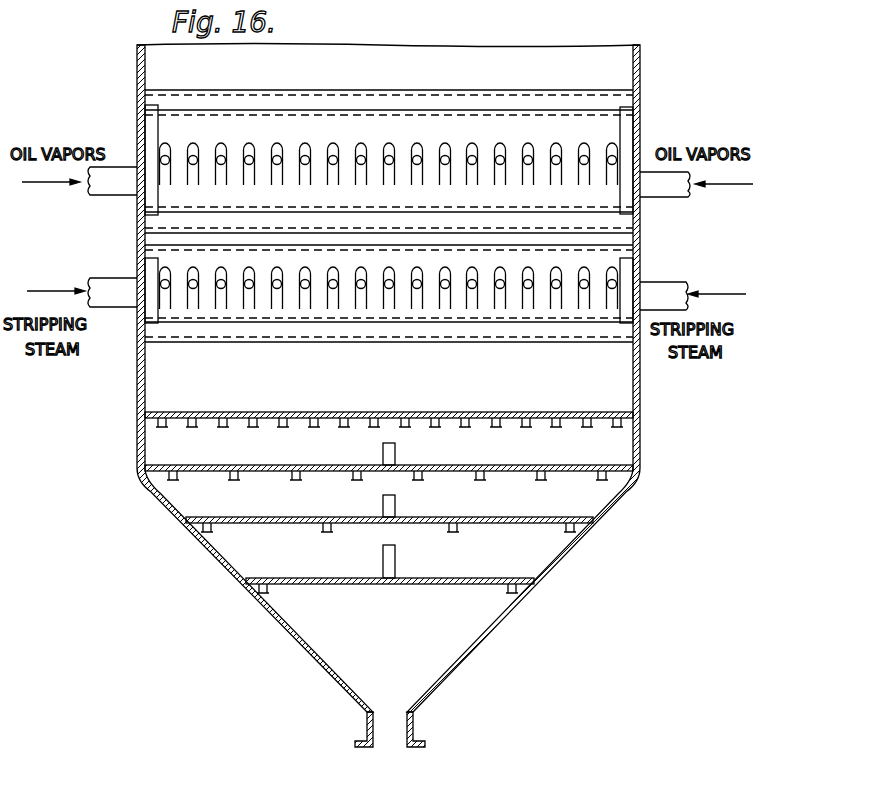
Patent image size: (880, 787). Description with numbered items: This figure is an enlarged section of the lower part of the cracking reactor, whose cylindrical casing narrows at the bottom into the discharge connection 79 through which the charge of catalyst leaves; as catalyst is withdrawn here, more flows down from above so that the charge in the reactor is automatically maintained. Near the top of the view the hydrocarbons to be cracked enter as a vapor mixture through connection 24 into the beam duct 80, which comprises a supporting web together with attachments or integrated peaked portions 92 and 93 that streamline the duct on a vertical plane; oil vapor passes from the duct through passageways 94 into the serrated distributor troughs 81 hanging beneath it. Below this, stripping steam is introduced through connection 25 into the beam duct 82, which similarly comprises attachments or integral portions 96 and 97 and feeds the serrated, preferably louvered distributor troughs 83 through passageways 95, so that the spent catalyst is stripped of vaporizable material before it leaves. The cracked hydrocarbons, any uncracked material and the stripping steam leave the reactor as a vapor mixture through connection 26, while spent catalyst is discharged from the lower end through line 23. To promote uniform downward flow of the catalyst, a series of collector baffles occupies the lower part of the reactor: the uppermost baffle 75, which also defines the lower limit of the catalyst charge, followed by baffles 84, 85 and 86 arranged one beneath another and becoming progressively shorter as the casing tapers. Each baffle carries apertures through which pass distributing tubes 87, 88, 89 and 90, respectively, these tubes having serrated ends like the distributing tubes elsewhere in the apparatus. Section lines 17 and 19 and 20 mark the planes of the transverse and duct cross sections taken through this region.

The section line 17- 17 is at (389, 10).
The section line 19- 19 is at (398, 84).
The section line 20- 20 is at (640, 254).
The spent catalyst discharge line / section line 23- 23 is at (394, 396).
The hydrocarbon vapor inlet connection / section line 24- 24 is at (105, 186).
The stripping steam connection / section line 25- 25 is at (101, 283).
The vapor outlet connection / section line 26- 26 is at (394, 558).
The collector baffle 75 is at (550, 412).
The discharge connection 79 is at (413, 728).
The beam duct 80 is at (383, 118).
The distributor troughs 81 is at (304, 143).
The beam duct 82 is at (485, 312).
The distributor troughs 83 is at (382, 305).
The collector baffle 84 is at (478, 465).
The collector baffle 85 is at (480, 518).
The collector baffle 86 is at (457, 578).
The distributing tubes 87 is at (308, 431).
The distributing tubes 88 is at (295, 480).
The distributing tubes 89 is at (327, 532).
The distributing tubes 90 is at (268, 588).
The peaked portion 92 is at (490, 100).
The peaked portion 93 is at (155, 222).
The passageways 94 is at (219, 143).
The passageways 95 is at (192, 292).
The attachment or integral portion 96 is at (640, 224).
The attachment or integral portion 97 is at (275, 327).